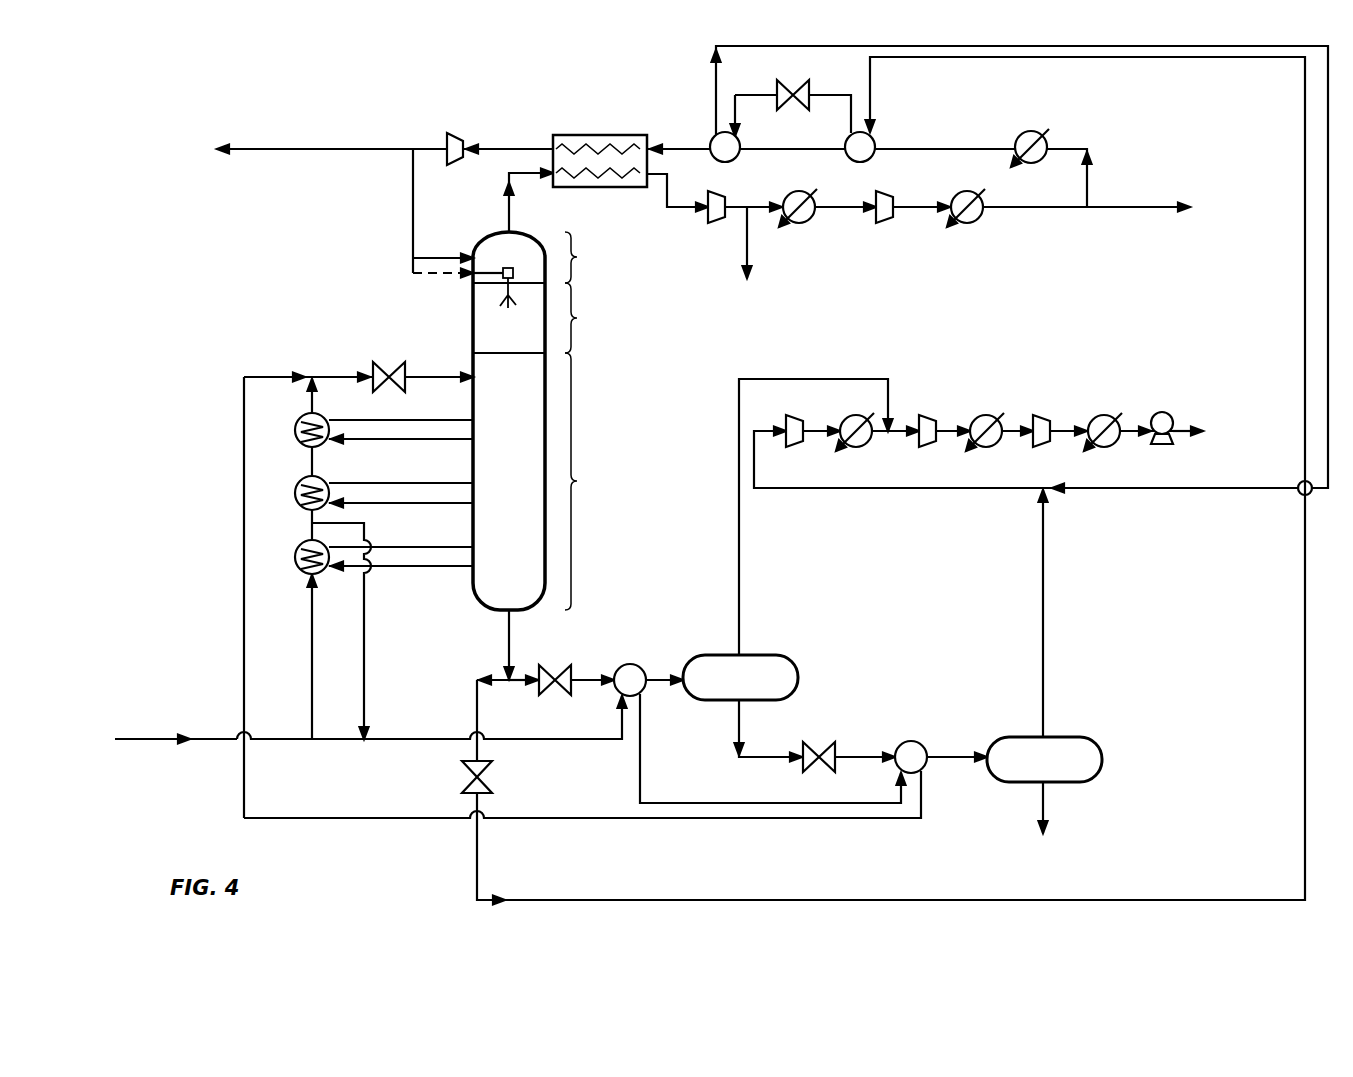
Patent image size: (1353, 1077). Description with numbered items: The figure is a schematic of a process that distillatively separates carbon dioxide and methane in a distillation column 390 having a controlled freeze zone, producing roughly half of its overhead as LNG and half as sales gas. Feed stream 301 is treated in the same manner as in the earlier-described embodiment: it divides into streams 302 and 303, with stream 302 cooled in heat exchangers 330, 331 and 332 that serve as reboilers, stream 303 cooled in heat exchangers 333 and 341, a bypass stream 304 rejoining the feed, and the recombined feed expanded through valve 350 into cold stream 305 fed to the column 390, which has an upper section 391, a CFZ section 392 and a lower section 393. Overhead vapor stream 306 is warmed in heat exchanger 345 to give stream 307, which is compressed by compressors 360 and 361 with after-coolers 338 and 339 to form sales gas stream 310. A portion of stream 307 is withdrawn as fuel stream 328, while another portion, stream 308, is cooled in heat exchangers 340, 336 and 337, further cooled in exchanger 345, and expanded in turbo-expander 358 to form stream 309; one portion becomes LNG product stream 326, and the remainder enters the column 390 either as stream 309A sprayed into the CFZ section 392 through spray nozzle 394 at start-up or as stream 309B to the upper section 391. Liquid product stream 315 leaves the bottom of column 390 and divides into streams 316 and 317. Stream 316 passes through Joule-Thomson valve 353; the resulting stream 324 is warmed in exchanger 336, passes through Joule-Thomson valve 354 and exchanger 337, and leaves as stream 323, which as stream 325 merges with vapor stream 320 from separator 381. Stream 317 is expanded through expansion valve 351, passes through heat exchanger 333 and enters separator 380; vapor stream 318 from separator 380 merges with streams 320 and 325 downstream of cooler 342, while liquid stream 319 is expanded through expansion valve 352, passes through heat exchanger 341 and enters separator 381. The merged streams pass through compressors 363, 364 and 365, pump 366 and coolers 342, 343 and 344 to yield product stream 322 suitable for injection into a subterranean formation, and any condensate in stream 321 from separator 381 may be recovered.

The feed stream 301 is at (168, 740).
The feed gas stream to column heat exchangers 302 is at (311, 640).
The feed gas stream 303 is at (338, 739).
The bypass stream 304 is at (366, 618).
The column feed stream 305 is at (421, 377).
The overhead vapor stream 306 is at (508, 218).
The warmed residue vapor stream 307 is at (666, 212).
The stream 308 is at (1064, 145).
The stream 309 is at (412, 202).
The stream 309A is at (438, 277).
The stream 309B is at (438, 251).
The sales gas stream 310 is at (1106, 206).
The liquid product stream 315 is at (508, 644).
The stream 316 is at (490, 677).
The stream 317 is at (525, 685).
The stream 318 is at (738, 522).
The separator liquid stream 319 is at (738, 723).
The vapor stream 320 is at (1042, 624).
The stream 321 is at (1042, 811).
The product stream 322 is at (1178, 438).
The recycle gas stream 323 is at (698, 146).
The stream 324 is at (478, 861).
The stream 325 is at (1098, 490).
The LNG product stream 326 is at (387, 148).
The fuel stream 328 is at (750, 246).
The heat exchanger 330 is at (298, 549).
The heat exchanger 331 is at (298, 486).
The heat exchanger 332 is at (298, 423).
The heat exchanger 333 is at (624, 666).
The heat exchanger 336 is at (866, 160).
The heat exchanger 337 is at (722, 161).
The after-cooler 338 is at (802, 220).
The after-cooler 339 is at (972, 220).
The heat exchanger 340 is at (1026, 165).
The heat exchanger 341 is at (891, 743).
The cooler 342 is at (866, 447).
The cooler 343 is at (996, 447).
The cooler 344 is at (1114, 447).
The heat exchanger 345 is at (581, 136).
The expansion valve 350 is at (375, 365).
The expansion valve 351 is at (554, 666).
The expansion valve 352 is at (816, 743).
The Joule-Thomson valve 353 is at (466, 767).
The Joule-Thomson valve 354 is at (789, 108).
The turbo-expander 358 is at (454, 134).
The compressor 360 is at (718, 222).
The compressor 361 is at (881, 220).
The compressor 363 is at (792, 418).
The compressor 364 is at (926, 418).
The compressor 365 is at (1041, 418).
The pump 366 is at (1164, 412).
The separator 380 is at (757, 655).
The separator 381 is at (1061, 737).
The distillation column 390 is at (474, 412).
The upper section 391 is at (591, 257).
The CFZ section 392 is at (591, 318).
The lower column section 393 is at (591, 481).
The spray nozzle 394 is at (493, 298).